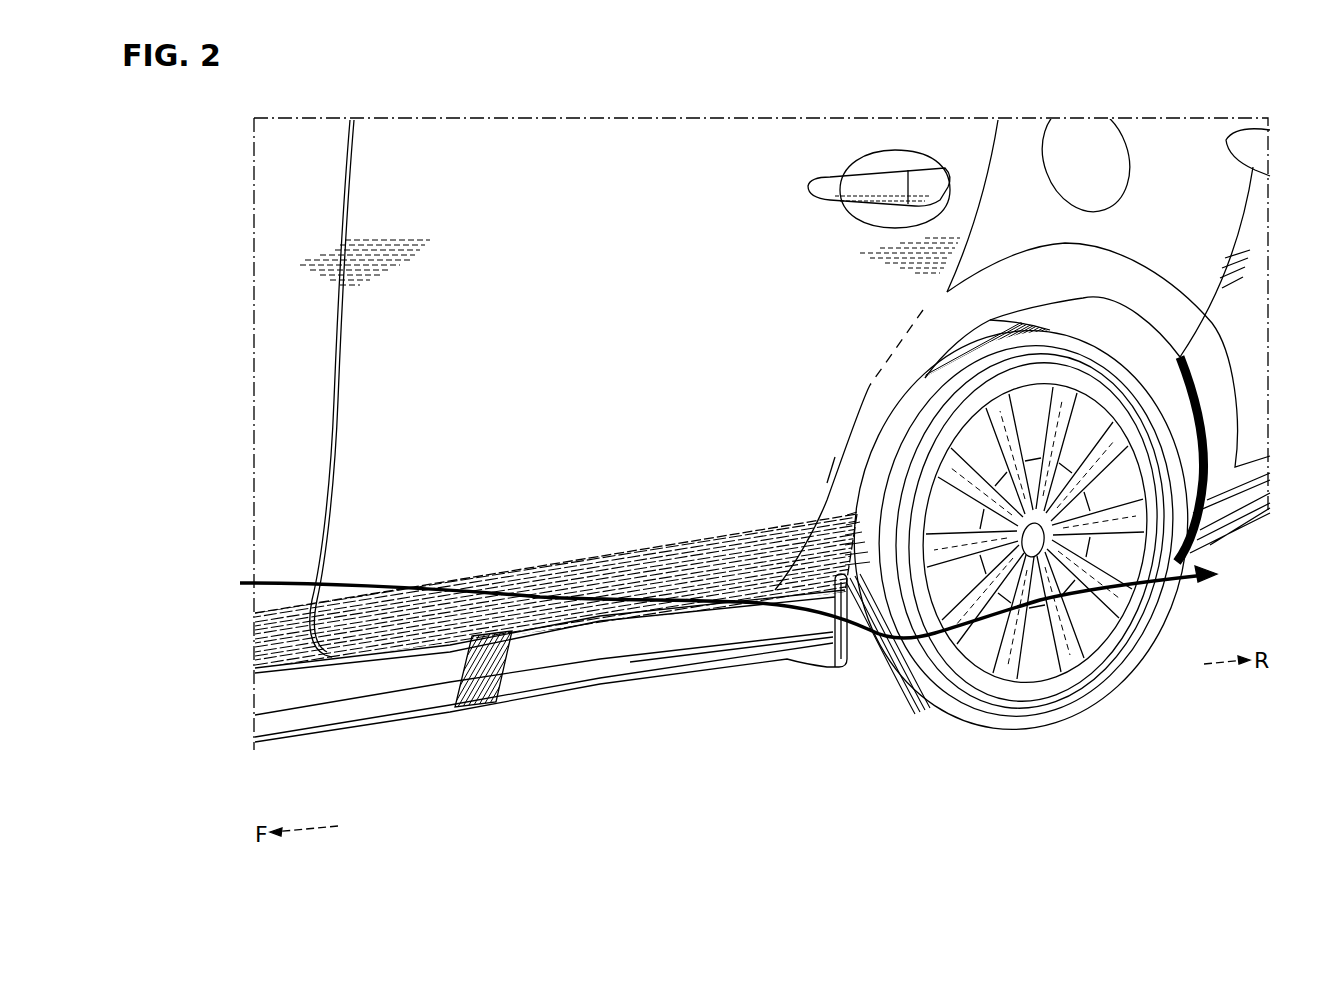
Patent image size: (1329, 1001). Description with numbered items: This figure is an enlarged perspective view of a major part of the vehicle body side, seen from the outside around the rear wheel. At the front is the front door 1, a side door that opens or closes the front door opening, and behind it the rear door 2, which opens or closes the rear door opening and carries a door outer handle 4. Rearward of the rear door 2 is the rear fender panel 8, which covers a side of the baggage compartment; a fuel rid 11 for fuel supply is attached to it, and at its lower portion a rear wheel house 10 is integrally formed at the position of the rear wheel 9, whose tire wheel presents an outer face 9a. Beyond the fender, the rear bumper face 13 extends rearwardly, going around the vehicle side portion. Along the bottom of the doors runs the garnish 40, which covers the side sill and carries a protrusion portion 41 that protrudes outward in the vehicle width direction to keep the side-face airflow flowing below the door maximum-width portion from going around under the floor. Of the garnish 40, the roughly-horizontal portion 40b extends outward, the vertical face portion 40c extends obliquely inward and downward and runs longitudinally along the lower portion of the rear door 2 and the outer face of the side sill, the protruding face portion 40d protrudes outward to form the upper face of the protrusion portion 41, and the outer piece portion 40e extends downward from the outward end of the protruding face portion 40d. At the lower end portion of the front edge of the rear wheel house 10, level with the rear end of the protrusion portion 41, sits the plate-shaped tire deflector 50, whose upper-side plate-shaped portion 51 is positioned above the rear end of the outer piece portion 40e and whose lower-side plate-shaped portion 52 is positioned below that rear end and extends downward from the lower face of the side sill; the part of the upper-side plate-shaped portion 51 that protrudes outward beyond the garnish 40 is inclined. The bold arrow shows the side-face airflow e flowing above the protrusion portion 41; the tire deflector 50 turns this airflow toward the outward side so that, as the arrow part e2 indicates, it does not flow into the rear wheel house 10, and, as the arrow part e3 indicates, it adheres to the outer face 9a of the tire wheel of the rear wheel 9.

The front door 1 is at (295, 360).
The rear door 2 is at (684, 116).
The door outer handle 4 is at (857, 207).
The rear fender panel 8 is at (1188, 212).
The rear wheel 9 is at (1043, 727).
The outer face of tire wheel 9a is at (1043, 633).
The rear wheel house 10 is at (1128, 322).
The fuel rid 11 is at (1128, 152).
The rear bumper face 13 is at (1258, 325).
The garnish 40 is at (388, 647).
The roughly-horizontal portion 40b is at (557, 632).
The vertical face portion 40c is at (528, 658).
The protruding face portion 40d is at (647, 663).
The outer piece portion 40e is at (507, 707).
The protrusion portion 41 is at (398, 722).
The tire deflector 50 is at (798, 666).
The upper-side plate-shaped portion 51 is at (790, 548).
The lower-side plate-shaped portion 52 is at (824, 670).
The side-face airflow e is at (608, 588).
The airflow part turned outward e2 is at (857, 650).
The airflow part adhering to tire wheel e3 is at (1012, 680).